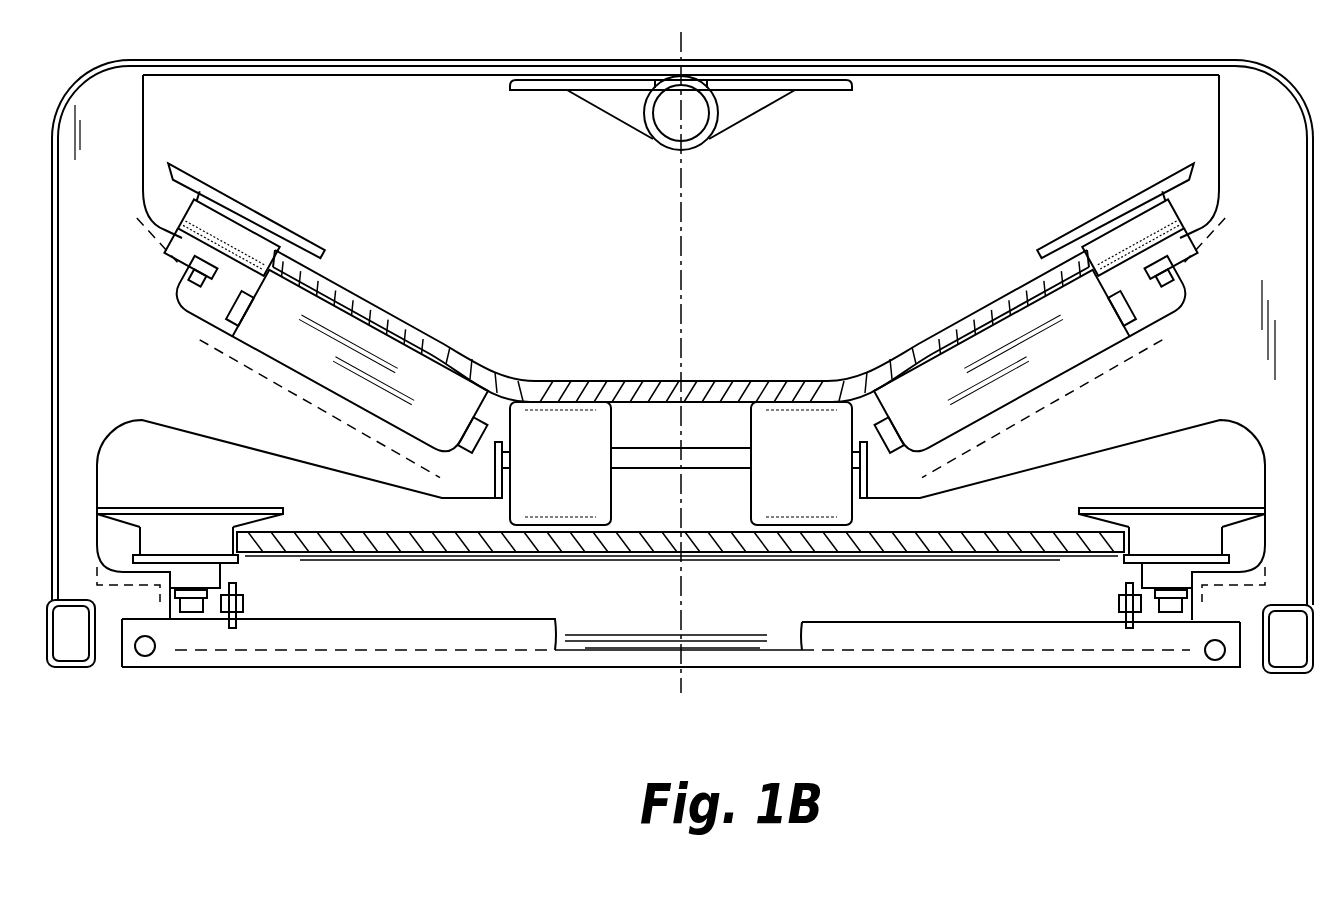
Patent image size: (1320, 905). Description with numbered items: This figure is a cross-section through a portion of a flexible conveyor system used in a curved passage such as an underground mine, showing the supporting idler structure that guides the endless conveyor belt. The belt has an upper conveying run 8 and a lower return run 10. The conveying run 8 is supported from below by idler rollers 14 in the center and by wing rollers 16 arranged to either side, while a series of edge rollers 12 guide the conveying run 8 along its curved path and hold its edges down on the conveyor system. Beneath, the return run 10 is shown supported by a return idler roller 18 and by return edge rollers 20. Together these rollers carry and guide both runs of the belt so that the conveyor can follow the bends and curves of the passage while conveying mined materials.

The upper conveying run 8 is at (656, 380).
The lower return run 10 is at (583, 547).
The edge rollers 12 is at (272, 225).
The idler rollers 14 is at (597, 432).
The wing rollers 16 is at (378, 352).
The return idler roller 18 is at (980, 607).
The return edge rollers 20 is at (190, 520).